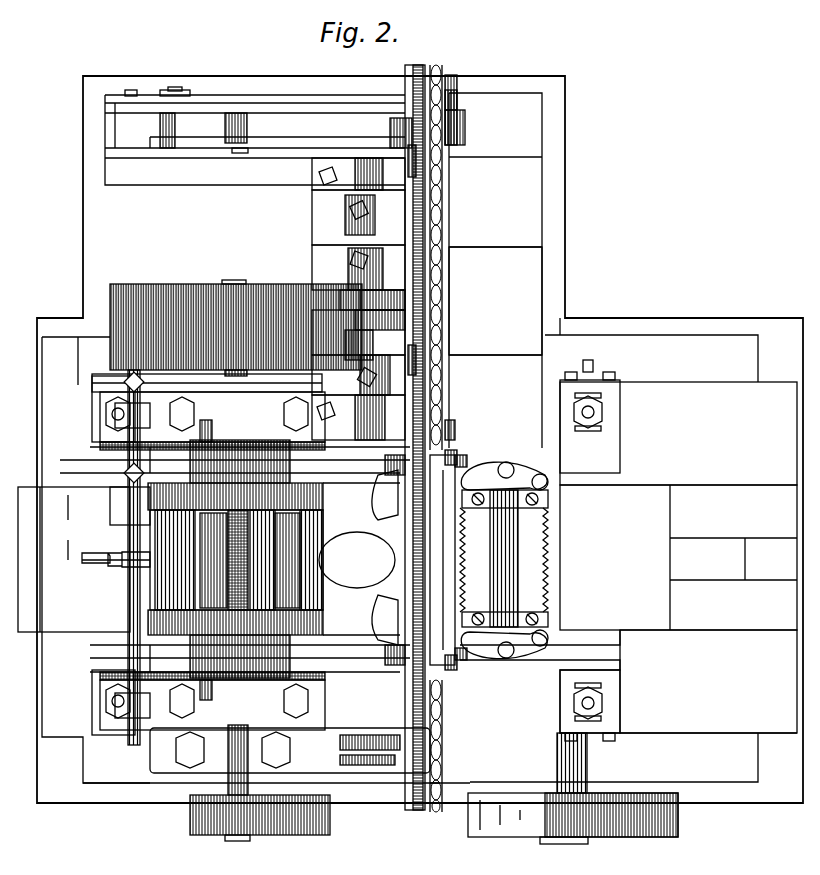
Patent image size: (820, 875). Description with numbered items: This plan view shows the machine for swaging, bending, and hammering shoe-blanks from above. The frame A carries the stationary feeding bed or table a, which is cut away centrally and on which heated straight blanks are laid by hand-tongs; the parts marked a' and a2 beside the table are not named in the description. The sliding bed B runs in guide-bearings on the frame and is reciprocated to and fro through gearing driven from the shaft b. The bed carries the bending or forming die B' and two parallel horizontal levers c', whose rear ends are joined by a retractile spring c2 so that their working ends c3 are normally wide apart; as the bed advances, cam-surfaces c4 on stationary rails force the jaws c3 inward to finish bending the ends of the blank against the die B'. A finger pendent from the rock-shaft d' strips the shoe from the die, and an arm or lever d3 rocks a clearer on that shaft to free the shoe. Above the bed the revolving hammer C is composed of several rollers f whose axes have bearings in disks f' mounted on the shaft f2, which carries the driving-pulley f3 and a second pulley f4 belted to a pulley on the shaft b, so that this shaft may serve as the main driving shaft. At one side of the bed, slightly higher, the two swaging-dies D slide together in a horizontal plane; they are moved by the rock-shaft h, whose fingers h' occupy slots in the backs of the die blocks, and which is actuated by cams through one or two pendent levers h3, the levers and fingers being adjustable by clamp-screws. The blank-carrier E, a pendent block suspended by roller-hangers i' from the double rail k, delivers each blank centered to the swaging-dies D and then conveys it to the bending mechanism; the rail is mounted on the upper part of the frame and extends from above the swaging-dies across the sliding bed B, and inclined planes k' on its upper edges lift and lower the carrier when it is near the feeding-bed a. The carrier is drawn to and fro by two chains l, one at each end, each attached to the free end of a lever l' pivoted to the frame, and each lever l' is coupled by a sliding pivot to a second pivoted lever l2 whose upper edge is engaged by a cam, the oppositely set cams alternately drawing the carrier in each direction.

The frame A is at (444, 550).
The sliding bed B is at (560, 559).
The bending or forming die B' is at (357, 560).
The revolving hammer C is at (236, 560).
The swaging-dies D is at (358, 299).
The blank-carrier E is at (448, 560).
The feeding bed or table a is at (312, 396).
The side plate a' is at (74, 559).
The block a2 is at (130, 506).
The shaft b is at (573, 798).
The horizontal levers c' is at (504, 560).
The retractile spring c2 is at (505, 558).
The working ends or jaws c3 is at (445, 557).
The cam-surfaces c4 is at (470, 560).
The rock-shaft d' is at (127, 557).
The arm or lever d3 is at (207, 383).
The rollers f is at (253, 562).
The disks f' is at (235, 559).
The shaft f2 is at (276, 760).
The driving-pulley f3 is at (236, 328).
The pulley f4 is at (260, 818).
The rock-shaft h is at (351, 299).
The fingers h' is at (367, 295).
The pendent levers h3 is at (380, 310).
The roller-hangers i' is at (396, 562).
The double rail k is at (411, 428).
The inclined planes k' is at (410, 260).
The chains l is at (445, 449).
The levers l' is at (255, 136).
The second pivoted levers l2 is at (258, 133).